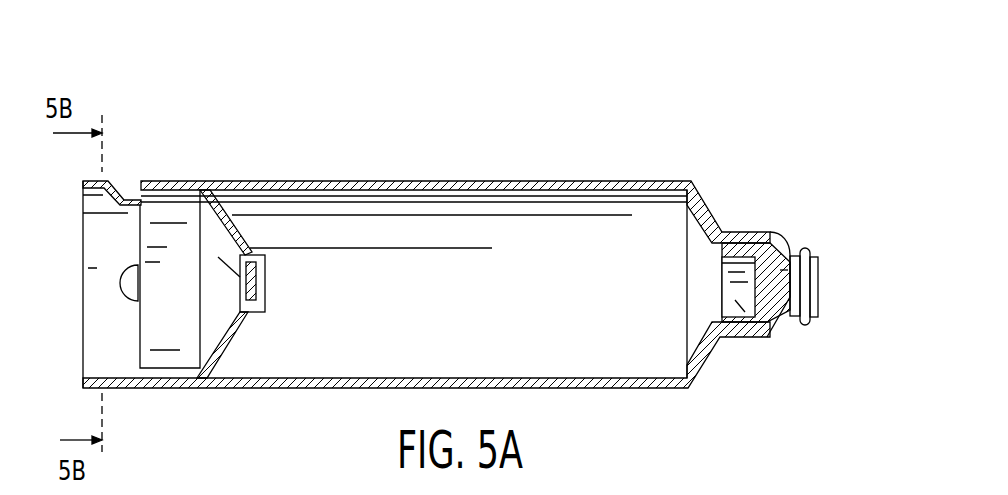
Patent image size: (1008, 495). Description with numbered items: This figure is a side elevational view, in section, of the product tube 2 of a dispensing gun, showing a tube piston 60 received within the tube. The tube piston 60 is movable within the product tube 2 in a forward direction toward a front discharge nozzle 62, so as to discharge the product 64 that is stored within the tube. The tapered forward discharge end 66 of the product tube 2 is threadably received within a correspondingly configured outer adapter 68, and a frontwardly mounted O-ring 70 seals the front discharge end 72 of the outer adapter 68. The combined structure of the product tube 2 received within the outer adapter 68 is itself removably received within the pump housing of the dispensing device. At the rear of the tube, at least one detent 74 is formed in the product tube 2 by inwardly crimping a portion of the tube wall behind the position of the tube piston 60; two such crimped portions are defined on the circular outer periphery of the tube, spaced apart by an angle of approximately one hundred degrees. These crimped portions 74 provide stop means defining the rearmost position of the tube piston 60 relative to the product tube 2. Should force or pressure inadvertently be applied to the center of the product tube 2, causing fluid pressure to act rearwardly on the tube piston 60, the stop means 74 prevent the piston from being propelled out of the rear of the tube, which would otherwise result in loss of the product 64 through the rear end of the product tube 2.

The product tube 2 is at (585, 181).
The tube piston 60 is at (232, 335).
The front discharge nozzle 62 is at (762, 288).
The product 64 is at (518, 293).
The tapered forward discharge end 66 is at (747, 305).
The outer adapter 68 is at (772, 237).
The O-ring 70 is at (805, 247).
The front discharge end 72 is at (818, 262).
The detent 74 is at (128, 190).